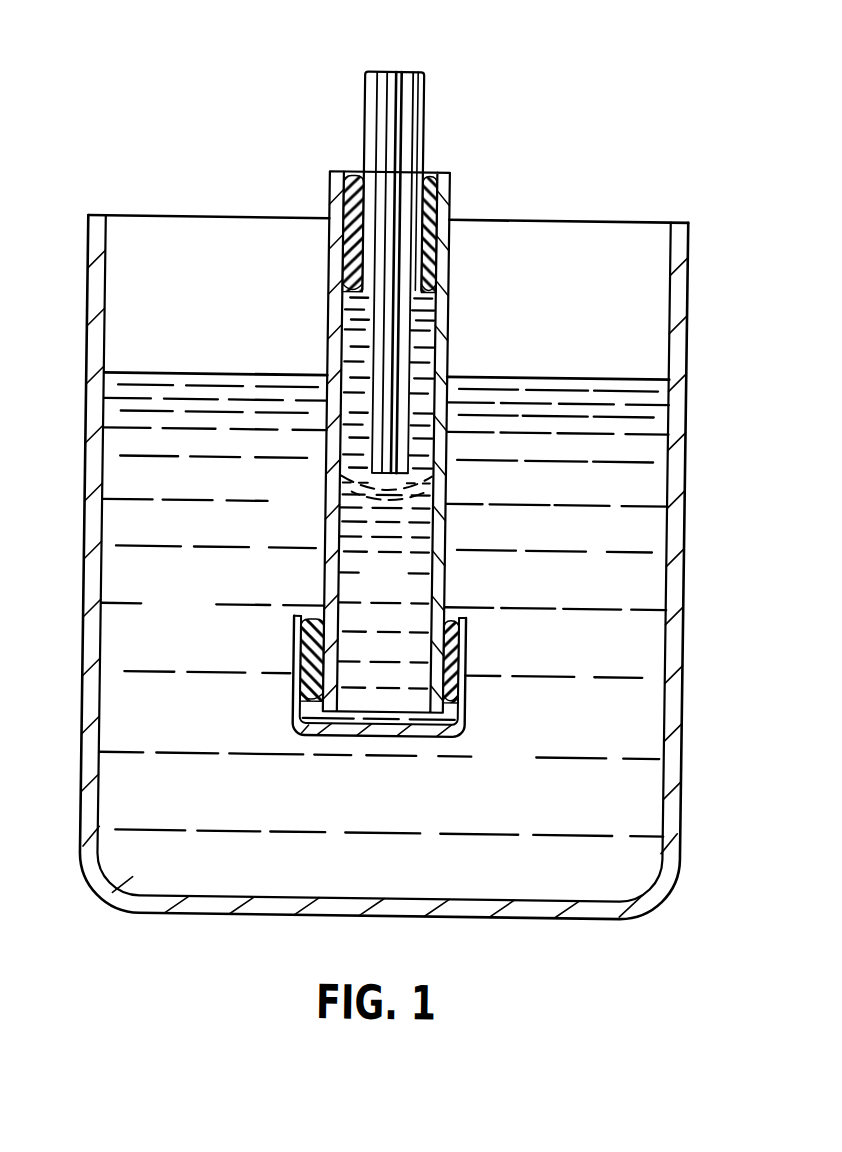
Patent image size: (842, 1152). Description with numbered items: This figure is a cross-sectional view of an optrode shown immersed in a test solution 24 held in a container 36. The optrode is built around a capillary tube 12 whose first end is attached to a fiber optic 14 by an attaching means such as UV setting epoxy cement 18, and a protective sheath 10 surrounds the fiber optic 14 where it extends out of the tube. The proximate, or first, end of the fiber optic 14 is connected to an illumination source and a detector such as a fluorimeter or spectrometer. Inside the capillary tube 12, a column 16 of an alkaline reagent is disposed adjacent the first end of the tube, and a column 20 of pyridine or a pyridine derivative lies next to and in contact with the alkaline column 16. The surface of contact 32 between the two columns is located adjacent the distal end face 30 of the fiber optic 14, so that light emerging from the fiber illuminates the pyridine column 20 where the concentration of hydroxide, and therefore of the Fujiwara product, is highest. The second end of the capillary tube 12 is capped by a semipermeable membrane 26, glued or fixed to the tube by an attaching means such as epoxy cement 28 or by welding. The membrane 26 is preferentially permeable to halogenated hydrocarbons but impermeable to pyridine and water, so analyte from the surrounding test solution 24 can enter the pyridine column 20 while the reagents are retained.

The protective sheath 10 is at (419, 90).
The capillary tube 12 is at (446, 172).
The fiber optic 14 is at (386, 70).
The column of alkaline reagent 16 is at (418, 357).
The UV setting epoxy cement 18 is at (430, 227).
The column of pyridine or pyridine derivative 20 is at (403, 589).
The test solution 24 is at (210, 624).
The semipermeable membrane 26 is at (464, 733).
The epoxy cement 28 is at (464, 641).
The distal end face of fiber optic 30 is at (365, 495).
The surface of contact 32 is at (420, 466).
The container 36 is at (87, 536).